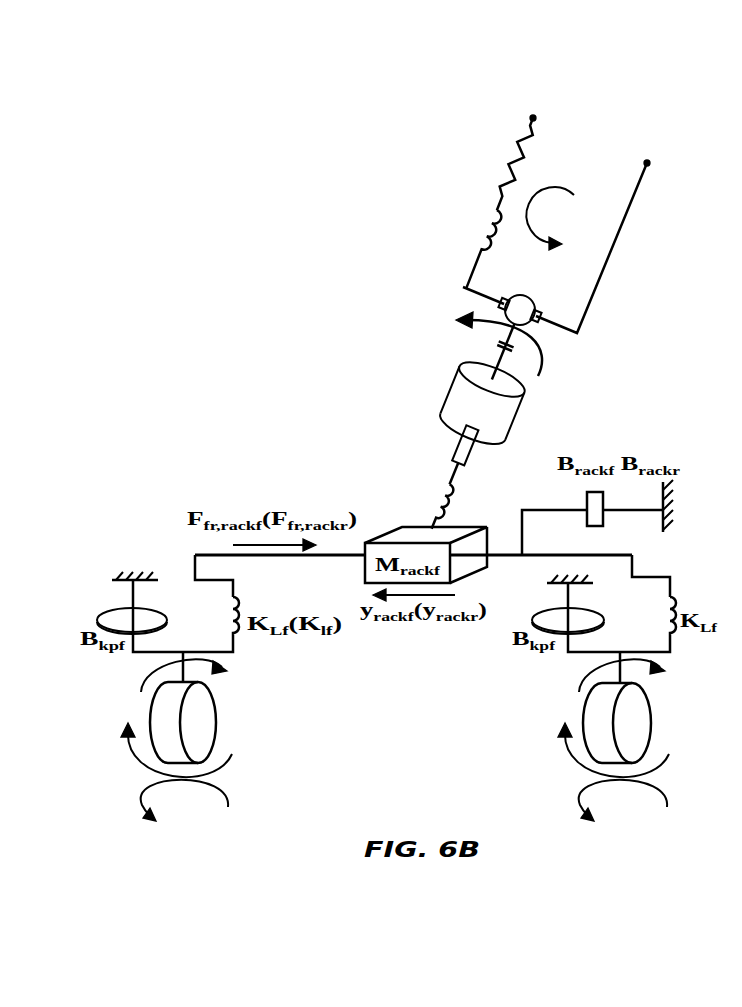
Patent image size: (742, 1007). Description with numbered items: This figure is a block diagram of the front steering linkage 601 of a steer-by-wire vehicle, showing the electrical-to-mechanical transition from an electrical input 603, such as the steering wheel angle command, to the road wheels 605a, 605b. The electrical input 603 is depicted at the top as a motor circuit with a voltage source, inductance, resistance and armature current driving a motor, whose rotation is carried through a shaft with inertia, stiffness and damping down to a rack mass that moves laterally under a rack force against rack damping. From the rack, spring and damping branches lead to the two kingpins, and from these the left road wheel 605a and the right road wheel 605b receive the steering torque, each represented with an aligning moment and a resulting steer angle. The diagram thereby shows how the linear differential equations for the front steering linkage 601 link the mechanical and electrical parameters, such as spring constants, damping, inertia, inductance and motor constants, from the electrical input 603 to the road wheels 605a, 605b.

The front steering linkage 601 is at (294, 324).
The electrical input 603 is at (582, 118).
The road wheel 605a is at (150, 712).
The road wheel 605b is at (583, 713).